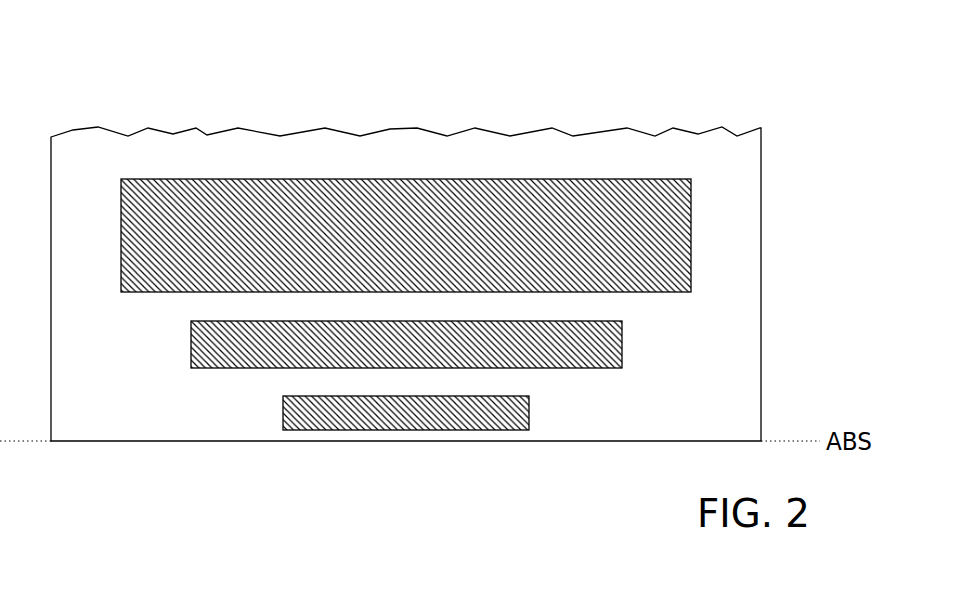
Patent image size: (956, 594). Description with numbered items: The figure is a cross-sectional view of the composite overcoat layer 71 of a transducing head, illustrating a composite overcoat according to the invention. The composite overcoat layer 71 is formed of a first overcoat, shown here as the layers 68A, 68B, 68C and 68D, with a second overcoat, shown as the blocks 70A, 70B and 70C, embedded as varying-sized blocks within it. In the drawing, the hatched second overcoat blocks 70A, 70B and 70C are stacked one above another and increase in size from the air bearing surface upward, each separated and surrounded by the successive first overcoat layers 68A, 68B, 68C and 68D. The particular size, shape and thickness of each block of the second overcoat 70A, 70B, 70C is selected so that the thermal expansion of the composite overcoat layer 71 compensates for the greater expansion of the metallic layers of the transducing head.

The composite overcoat layer 71 is at (769, 90).
The first overcoat 68A is at (498, 437).
The first overcoat 68B is at (519, 379).
The first overcoat 68C is at (600, 311).
The first overcoat 68D is at (655, 162).
The second overcoat 70A is at (510, 414).
The second overcoat 70B is at (603, 346).
The second overcoat 70C is at (662, 232).